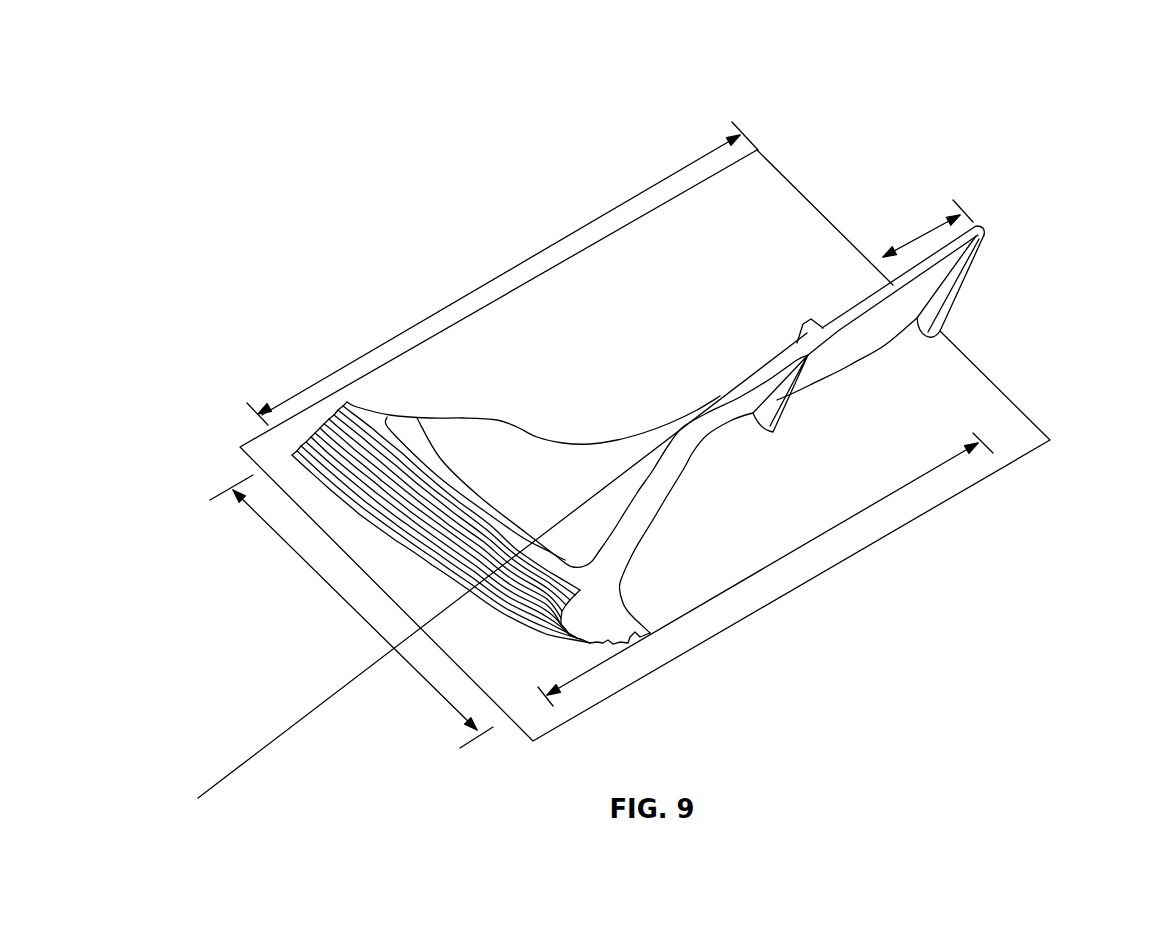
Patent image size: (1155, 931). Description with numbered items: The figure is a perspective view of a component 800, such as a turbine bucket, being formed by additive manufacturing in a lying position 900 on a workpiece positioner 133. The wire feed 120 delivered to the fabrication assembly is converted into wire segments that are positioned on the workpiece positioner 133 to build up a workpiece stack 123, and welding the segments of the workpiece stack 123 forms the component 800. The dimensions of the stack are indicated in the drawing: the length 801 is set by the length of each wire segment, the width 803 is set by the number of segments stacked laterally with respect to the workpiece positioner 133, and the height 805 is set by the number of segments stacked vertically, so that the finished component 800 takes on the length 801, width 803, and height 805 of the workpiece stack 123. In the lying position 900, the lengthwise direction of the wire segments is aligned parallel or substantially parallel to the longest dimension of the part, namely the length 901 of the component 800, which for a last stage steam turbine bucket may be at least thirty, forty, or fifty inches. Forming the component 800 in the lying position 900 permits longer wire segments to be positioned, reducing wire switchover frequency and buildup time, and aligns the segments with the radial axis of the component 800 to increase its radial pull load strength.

The lying position 900 is at (352, 186).
The length 801 is at (561, 240).
The height 805 is at (915, 240).
The workpiece stack 123 is at (985, 268).
The component 800 is at (533, 457).
The workpiece positioner 133 is at (964, 492).
The width 803 is at (306, 566).
The length of the component 901 is at (790, 558).
The wire feed 120 is at (325, 706).